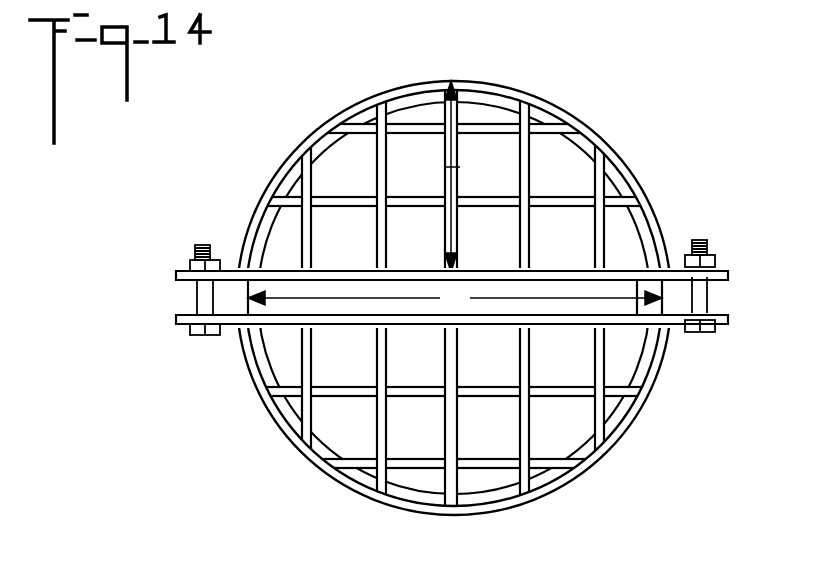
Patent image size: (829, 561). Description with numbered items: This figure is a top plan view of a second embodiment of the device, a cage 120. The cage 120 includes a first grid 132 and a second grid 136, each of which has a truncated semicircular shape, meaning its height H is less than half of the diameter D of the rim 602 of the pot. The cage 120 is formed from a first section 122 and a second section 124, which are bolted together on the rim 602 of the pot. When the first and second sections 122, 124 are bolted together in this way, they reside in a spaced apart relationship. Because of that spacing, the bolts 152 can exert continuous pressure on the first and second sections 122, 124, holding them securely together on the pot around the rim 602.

The cage 120 is at (661, 118).
The first section 122 is at (584, 118).
The second section 124 is at (582, 483).
The first grid 132 is at (378, 204).
The second grid 136 is at (383, 388).
The bolts 152 is at (208, 302).
The rim 602 is at (254, 312).